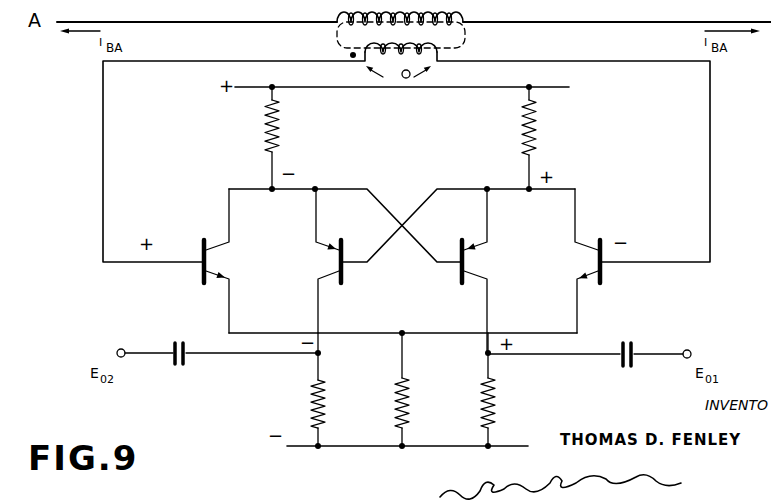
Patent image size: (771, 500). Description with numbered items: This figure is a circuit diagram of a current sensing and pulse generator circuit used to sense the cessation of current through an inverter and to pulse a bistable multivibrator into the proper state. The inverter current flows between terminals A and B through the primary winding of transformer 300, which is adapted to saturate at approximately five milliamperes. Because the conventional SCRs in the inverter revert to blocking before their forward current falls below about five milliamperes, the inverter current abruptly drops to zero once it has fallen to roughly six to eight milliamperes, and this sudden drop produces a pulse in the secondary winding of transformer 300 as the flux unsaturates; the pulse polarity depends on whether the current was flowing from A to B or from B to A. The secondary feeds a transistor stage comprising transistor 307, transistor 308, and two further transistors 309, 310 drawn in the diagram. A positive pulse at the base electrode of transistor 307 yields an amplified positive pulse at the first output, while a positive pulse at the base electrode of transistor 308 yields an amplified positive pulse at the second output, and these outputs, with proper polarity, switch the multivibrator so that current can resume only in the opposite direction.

The transformer 300 is at (329, 36).
The transistor 307 is at (197, 281).
The transistor 308 is at (605, 274).
The transistor Q3 309 is at (347, 276).
The transistor Q4 310 is at (450, 281).